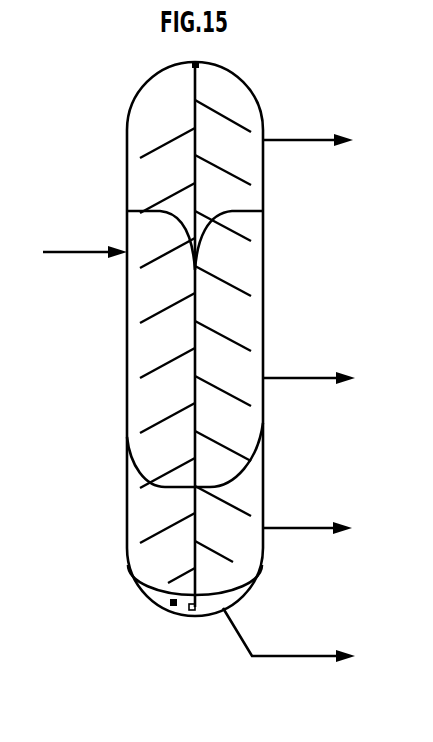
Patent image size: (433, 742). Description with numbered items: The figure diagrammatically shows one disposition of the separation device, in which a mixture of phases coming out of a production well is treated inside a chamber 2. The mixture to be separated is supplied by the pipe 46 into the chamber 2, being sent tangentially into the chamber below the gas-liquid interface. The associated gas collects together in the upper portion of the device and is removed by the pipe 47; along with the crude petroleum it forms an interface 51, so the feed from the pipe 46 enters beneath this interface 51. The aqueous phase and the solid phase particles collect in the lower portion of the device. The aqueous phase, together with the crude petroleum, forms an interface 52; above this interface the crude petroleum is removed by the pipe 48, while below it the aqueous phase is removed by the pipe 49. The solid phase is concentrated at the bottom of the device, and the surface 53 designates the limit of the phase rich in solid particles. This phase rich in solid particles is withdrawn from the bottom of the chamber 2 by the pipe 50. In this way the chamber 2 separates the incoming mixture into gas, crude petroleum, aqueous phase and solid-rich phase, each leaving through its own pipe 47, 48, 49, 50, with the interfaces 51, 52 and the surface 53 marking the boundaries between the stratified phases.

The chamber 2 is at (217, 339).
The pipe 46 is at (68, 250).
The pipe 47 is at (307, 138).
The pipe 48 is at (306, 376).
The pipe 49 is at (310, 526).
The pipe 50 is at (306, 656).
The interface 51 is at (242, 215).
The interface 52 is at (157, 489).
The surface 53 is at (173, 606).